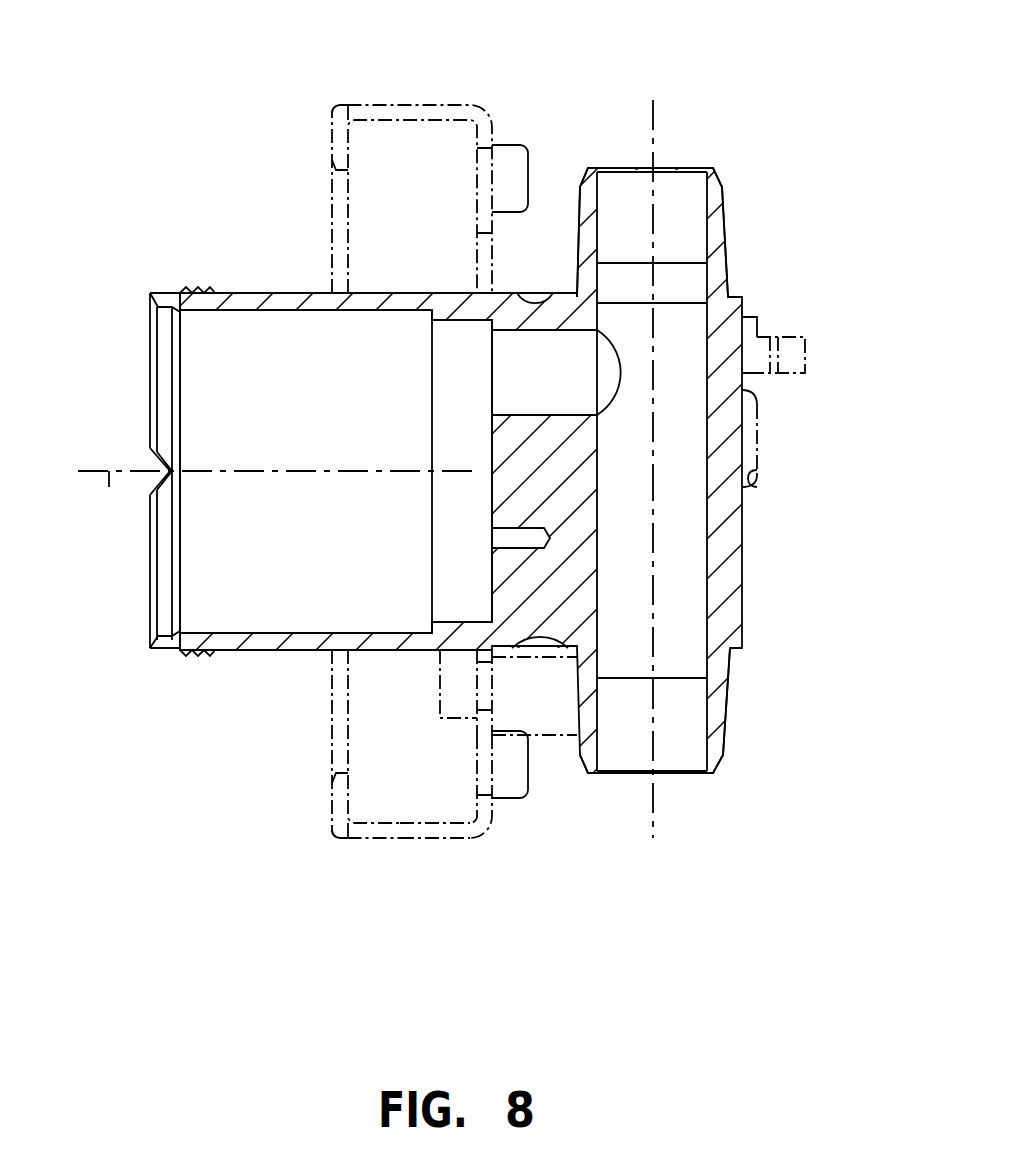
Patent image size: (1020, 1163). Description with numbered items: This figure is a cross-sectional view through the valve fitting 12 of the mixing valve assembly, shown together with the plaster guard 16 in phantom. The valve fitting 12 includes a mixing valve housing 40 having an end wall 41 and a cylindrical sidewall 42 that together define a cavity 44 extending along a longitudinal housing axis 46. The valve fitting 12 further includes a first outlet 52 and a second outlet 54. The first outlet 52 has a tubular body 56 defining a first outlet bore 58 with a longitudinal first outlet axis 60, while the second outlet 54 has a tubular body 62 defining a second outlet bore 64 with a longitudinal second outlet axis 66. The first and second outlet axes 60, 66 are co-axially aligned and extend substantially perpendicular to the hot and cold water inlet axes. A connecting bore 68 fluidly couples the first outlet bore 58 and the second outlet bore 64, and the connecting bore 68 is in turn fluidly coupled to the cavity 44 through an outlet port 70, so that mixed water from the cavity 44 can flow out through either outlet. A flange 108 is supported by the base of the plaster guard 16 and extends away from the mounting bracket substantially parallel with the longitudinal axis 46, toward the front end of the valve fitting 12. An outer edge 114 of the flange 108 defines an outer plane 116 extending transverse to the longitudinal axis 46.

The valve fitting 12 is at (226, 706).
The plaster guard 16 is at (383, 855).
The mixing valve housing 40 is at (150, 648).
The end wall 41 is at (487, 578).
The cylindrical sidewall 42 is at (245, 300).
The cavity 44 is at (194, 409).
The longitudinal housing axis 46 is at (106, 495).
The first outlet 52 is at (722, 192).
The second outlet 54 is at (723, 753).
The tubular body 56 is at (722, 235).
The first outlet bore 58 is at (615, 200).
The first outlet axis 60 is at (655, 133).
The tubular body 62 is at (722, 713).
The second outlet bore 64 is at (620, 780).
The second outlet axis 66 is at (658, 808).
The connecting bore 68 is at (676, 515).
The outlet port 70 is at (531, 352).
The flange 108 is at (445, 855).
The outer edge 114 is at (332, 824).
The outer plane 116 is at (330, 218).